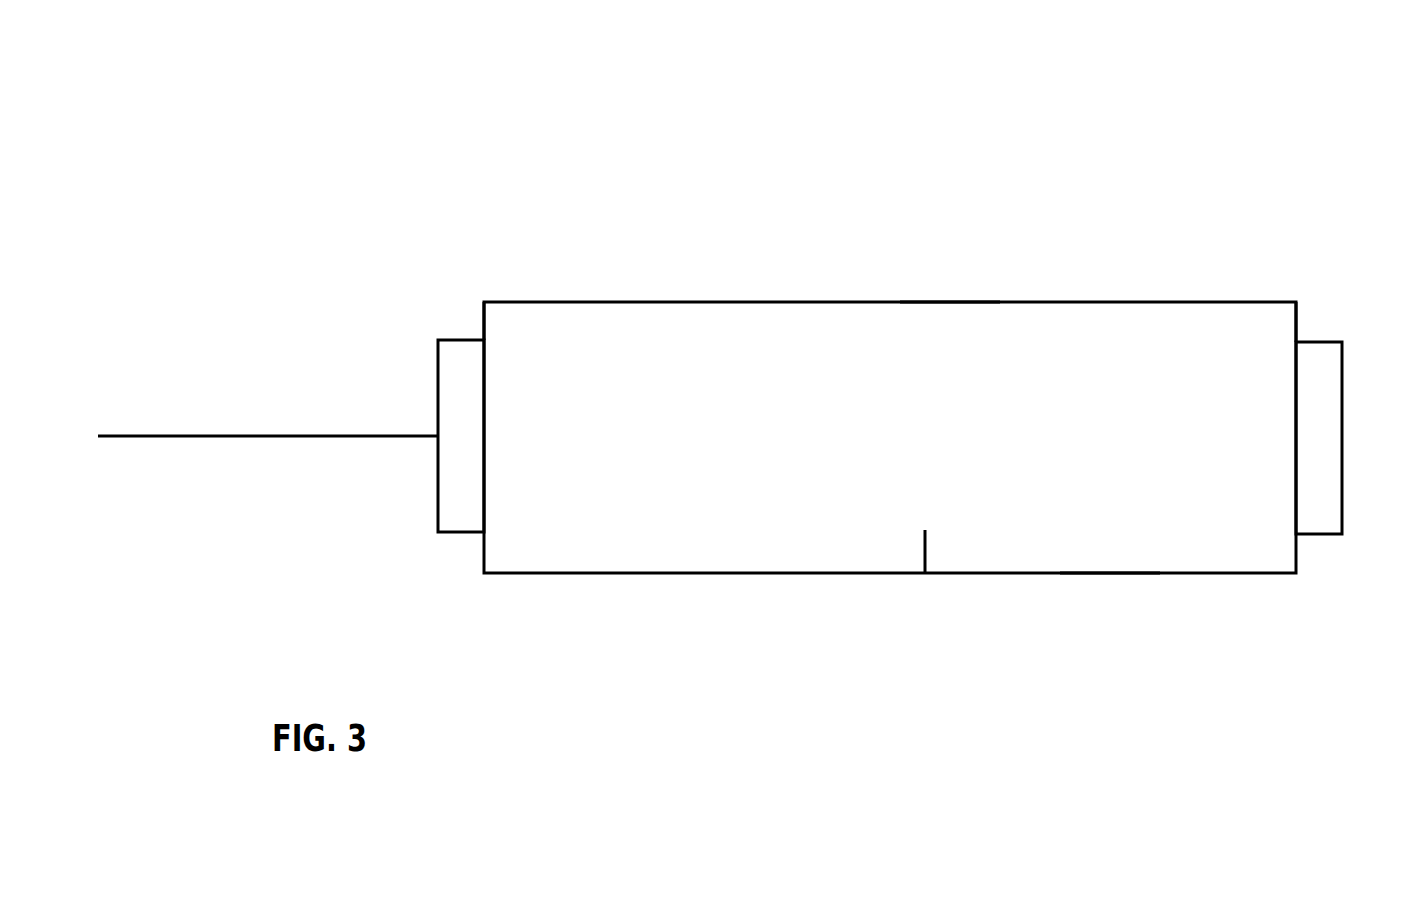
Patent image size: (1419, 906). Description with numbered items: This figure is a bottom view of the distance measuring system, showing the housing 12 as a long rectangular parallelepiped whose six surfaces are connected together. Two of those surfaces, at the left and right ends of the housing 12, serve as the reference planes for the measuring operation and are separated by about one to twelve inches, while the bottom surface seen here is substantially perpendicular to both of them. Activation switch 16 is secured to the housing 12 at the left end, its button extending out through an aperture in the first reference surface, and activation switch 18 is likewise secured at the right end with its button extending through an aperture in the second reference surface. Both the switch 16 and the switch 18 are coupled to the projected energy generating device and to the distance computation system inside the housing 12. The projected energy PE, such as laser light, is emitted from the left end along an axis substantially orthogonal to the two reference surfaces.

The housing 12 is at (795, 302).
The activation switch 16 is at (452, 510).
The activation switch 18 is at (1318, 442).
The projected energy PE is at (192, 440).